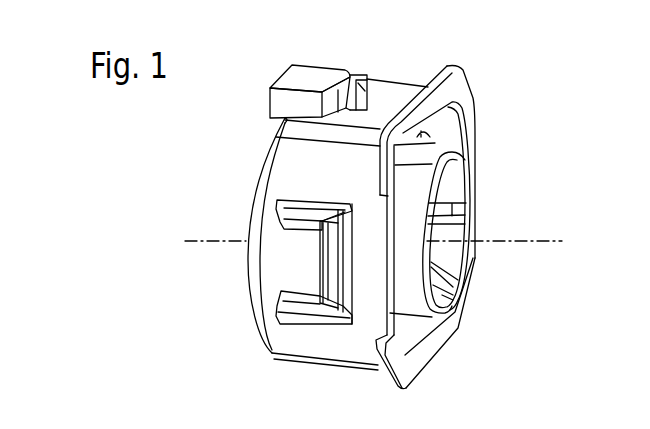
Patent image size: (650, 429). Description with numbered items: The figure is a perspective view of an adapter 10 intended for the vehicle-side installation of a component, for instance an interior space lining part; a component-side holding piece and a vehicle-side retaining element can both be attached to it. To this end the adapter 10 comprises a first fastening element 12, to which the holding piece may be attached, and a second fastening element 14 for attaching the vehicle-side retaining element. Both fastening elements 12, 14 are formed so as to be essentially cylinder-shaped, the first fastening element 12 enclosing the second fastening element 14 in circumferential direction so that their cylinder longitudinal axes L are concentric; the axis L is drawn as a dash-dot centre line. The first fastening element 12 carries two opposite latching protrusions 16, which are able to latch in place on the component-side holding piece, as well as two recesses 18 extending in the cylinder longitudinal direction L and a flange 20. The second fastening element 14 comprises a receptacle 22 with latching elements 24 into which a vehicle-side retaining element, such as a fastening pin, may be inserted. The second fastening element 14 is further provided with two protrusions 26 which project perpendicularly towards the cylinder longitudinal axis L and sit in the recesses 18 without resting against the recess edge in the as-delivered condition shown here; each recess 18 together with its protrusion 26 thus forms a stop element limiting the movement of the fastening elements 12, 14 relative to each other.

The adapter 10 is at (552, 86).
The first fastening element 12 is at (276, 165).
The second fastening element 14 is at (429, 147).
The latching protrusions 16 is at (318, 259).
The recesses 18 is at (360, 92).
The flange 20 is at (460, 83).
The receptacle 22 is at (456, 179).
The latching elements 24 is at (463, 238).
The protrusions 26 is at (317, 78).
The cylinder longitudinal axis L is at (540, 243).